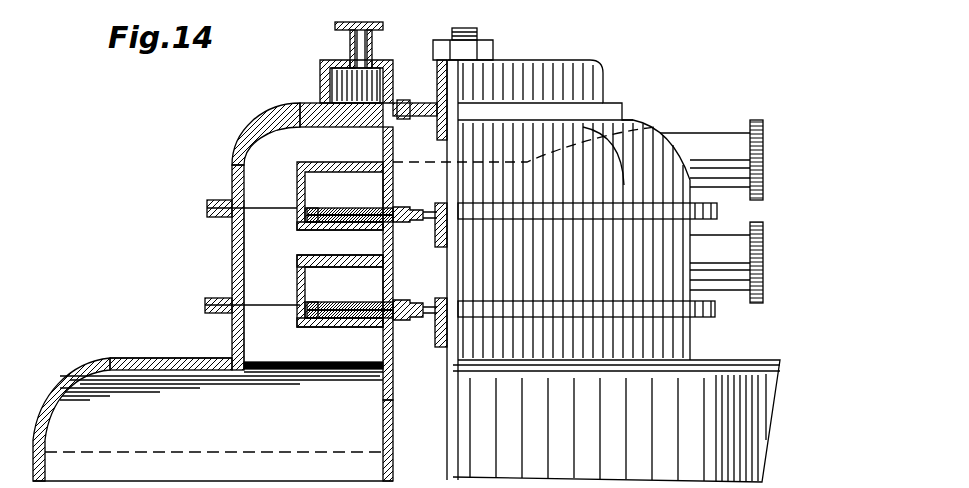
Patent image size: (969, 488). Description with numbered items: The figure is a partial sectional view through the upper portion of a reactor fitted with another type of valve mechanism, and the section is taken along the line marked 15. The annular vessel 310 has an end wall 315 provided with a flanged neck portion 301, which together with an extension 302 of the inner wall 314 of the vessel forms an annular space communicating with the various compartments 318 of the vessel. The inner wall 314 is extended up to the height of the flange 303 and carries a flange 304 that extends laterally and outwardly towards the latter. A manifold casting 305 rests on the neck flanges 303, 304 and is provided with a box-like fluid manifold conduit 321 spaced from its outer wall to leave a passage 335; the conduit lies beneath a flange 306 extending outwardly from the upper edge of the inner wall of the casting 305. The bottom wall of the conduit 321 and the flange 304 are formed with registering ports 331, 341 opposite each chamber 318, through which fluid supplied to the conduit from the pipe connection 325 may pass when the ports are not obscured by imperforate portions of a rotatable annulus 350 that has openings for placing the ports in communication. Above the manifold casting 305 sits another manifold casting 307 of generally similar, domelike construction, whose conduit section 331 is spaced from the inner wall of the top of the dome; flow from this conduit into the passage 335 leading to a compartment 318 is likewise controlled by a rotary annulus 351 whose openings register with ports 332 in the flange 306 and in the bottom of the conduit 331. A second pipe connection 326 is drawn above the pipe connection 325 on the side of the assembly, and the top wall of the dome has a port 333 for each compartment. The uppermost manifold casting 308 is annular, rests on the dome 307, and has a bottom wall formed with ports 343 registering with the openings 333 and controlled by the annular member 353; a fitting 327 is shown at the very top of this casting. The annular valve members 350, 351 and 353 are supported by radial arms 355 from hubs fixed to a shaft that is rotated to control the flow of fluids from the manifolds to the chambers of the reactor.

The section line 15- 15 is at (285, 178).
The flanged neck portion 301 is at (232, 342).
The extension of the inner wall 302 is at (385, 380).
The flange 303 is at (205, 305).
The flange 304 is at (302, 319).
The manifold casting 305 is at (232, 256).
The flange 306 is at (303, 231).
The manifold casting 307 is at (238, 168).
The uppermost manifold casting 308 is at (340, 70).
The vessel 310 is at (33, 427).
The inner wall 314 is at (383, 432).
The end wall 315 is at (101, 357).
The compartments 318 is at (218, 470).
The fluid manifold conduit 321 is at (340, 274).
The pipe connection 325 is at (733, 285).
The upper pipe connection 326 is at (727, 113).
The plug stem 327 is at (337, 41).
The ports; conduit section 331 is at (300, 347).
The ports 332 is at (297, 213).
The port 333 is at (362, 110).
The passage 335 is at (263, 275).
The ports 341 is at (360, 302).
The ports 343 is at (333, 96).
The rotatable annulus 350 is at (352, 325).
The rotary annulus 351 is at (347, 222).
The annular member 353 is at (363, 103).
The radial arms 355 is at (420, 224).